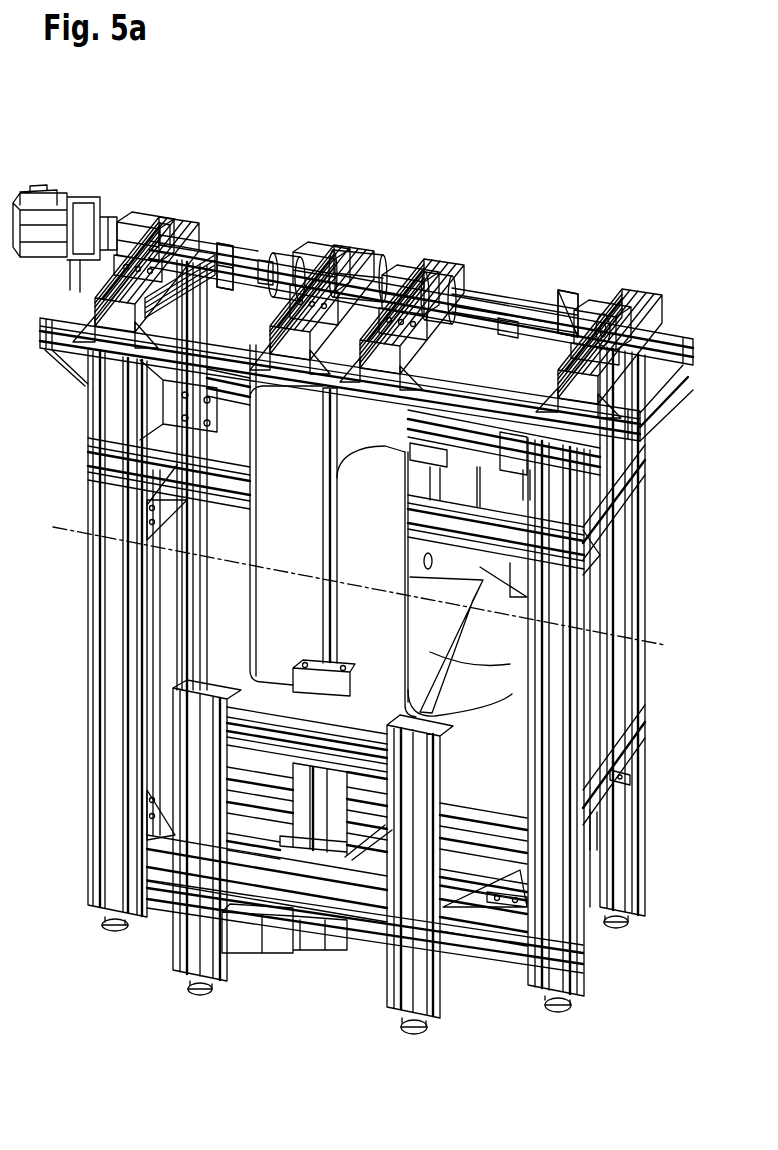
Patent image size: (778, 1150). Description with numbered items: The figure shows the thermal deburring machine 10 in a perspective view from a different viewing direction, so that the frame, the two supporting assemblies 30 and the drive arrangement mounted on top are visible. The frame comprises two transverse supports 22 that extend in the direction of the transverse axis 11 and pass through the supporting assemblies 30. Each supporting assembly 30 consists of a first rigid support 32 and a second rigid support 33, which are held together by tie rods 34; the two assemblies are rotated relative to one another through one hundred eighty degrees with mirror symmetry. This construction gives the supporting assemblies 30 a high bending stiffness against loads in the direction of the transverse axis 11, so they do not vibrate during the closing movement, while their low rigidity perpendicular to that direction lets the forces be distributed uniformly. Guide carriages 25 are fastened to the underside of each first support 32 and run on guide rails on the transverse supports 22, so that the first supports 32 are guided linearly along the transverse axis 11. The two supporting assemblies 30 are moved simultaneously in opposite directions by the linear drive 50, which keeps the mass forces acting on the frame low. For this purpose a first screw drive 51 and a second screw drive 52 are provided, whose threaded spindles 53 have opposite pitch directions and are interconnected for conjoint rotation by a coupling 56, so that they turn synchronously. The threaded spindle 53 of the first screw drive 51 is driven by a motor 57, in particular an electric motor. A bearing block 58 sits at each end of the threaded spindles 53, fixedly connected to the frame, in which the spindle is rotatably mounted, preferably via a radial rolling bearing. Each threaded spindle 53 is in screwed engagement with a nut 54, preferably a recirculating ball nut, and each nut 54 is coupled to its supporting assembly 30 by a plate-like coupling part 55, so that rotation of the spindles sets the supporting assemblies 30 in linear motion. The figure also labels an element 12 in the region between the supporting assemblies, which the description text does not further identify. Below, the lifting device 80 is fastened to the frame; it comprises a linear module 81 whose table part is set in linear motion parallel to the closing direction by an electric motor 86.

The thermal deburring machine 10 is at (608, 134).
The transverse axis 11 is at (53, 527).
The holding unit 12 is at (410, 583).
The transverse supports 22 is at (643, 468).
The guide carriages 25 is at (410, 493).
The supporting assemblies 30 is at (400, 627).
The first rigid support 32 is at (503, 323).
The second rigid support 33 is at (305, 617).
The tie rods 34 is at (445, 472).
The linear drive 50 is at (495, 170).
The first screw drive 51 is at (222, 255).
The second screw drive 52 is at (562, 320).
The threaded spindles 53 is at (397, 290).
The nut 54 is at (291, 275).
The coupling part 55 is at (264, 282).
The coupling 56 is at (363, 273).
The motor 57 is at (66, 205).
The bearing block 58 is at (140, 220).
The lifting device 80 is at (318, 822).
The linear module 81 is at (317, 621).
The electric motor 86 is at (257, 923).